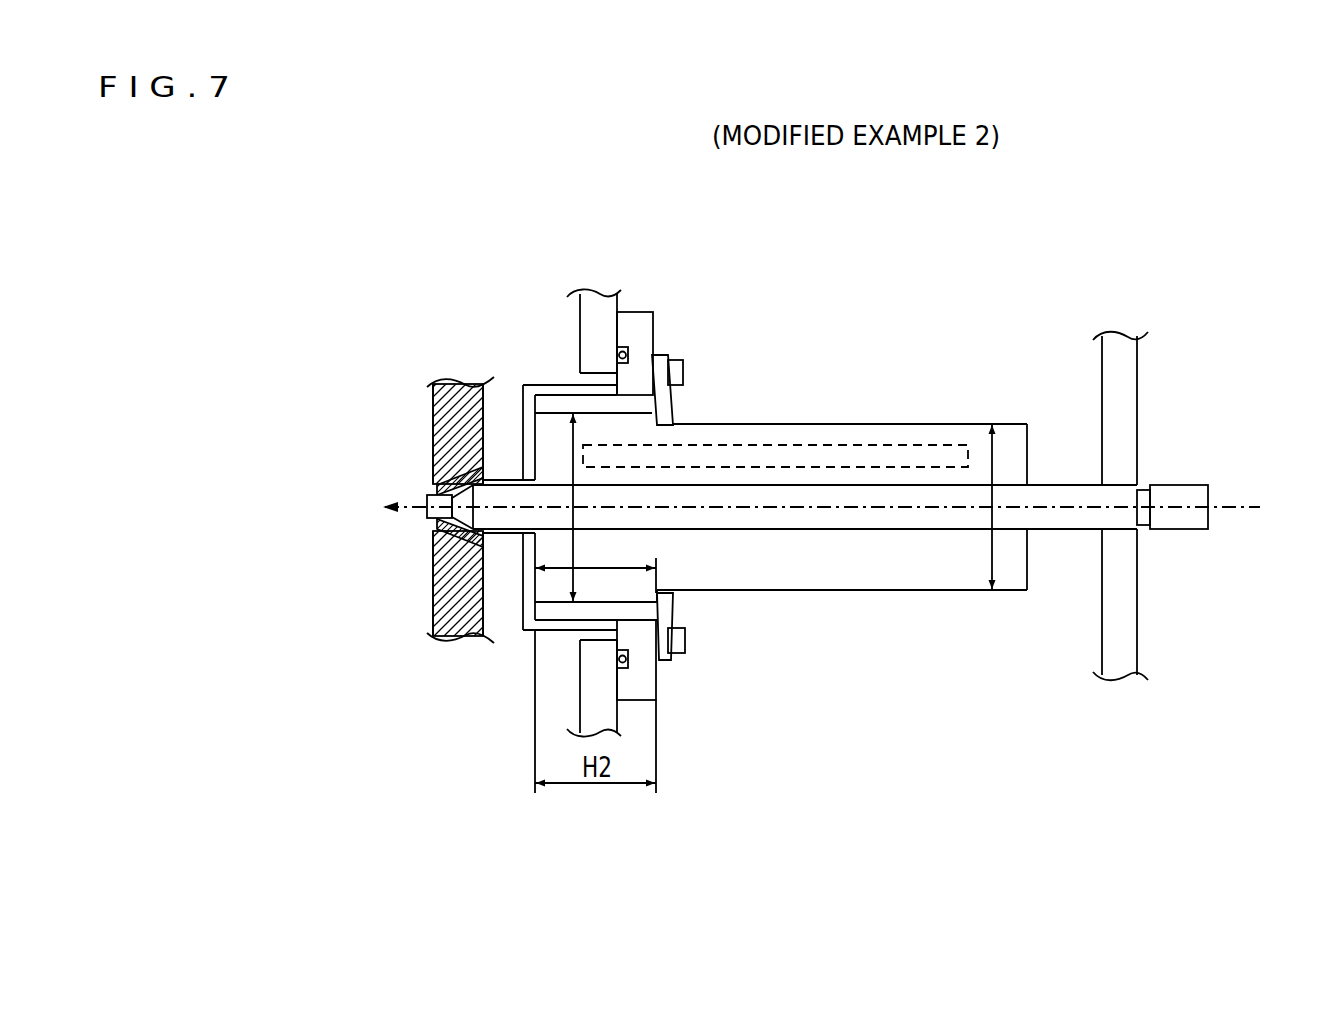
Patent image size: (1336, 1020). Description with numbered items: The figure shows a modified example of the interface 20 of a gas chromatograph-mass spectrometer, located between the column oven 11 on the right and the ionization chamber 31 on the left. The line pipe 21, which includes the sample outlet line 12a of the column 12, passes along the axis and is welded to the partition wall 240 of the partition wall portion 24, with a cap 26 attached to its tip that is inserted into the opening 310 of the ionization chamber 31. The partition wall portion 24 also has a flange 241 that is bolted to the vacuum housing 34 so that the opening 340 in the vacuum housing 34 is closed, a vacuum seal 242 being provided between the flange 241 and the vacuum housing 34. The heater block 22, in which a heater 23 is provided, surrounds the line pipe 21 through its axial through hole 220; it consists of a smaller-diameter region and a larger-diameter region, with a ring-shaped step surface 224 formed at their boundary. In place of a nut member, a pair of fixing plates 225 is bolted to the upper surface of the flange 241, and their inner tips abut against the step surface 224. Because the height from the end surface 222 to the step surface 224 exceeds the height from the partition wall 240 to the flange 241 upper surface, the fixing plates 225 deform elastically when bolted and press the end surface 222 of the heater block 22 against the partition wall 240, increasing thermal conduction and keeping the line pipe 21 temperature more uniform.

The column oven 11 is at (1127, 378).
The sample outlet line 12a is at (1230, 511).
The column 12 is at (1221, 559).
The interface 20 is at (738, 515).
The line pipe 21 is at (940, 520).
The heater block 22 is at (900, 437).
The heater 23 is at (824, 430).
The partition wall portion 24 is at (627, 305).
The cap 26 is at (482, 473).
The ionization chamber 31 is at (445, 600).
The vacuum housing 34 is at (603, 708).
The through hole 220 is at (842, 531).
The end surface 222 is at (531, 590).
The step surface 224 is at (673, 594).
The fixing plates 225 is at (662, 405).
The partition wall 240 is at (527, 407).
The flange 241 is at (637, 325).
The vacuum seal 242 is at (628, 352).
The opening 310 is at (430, 488).
The opening 340 is at (587, 634).